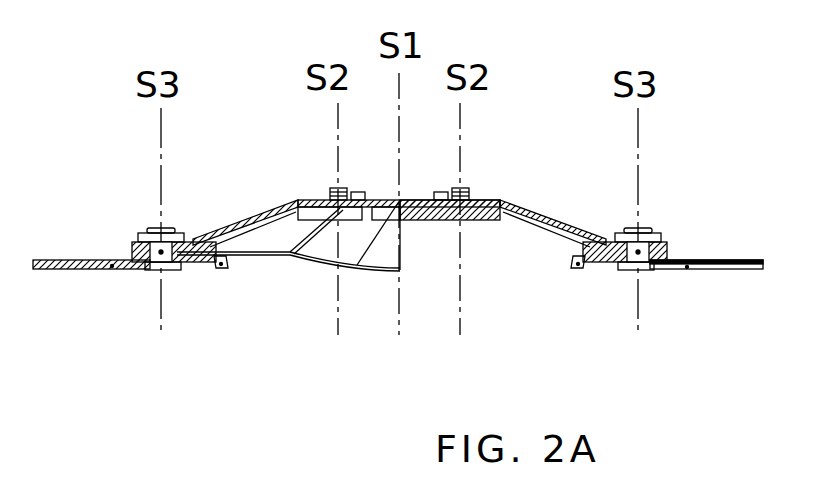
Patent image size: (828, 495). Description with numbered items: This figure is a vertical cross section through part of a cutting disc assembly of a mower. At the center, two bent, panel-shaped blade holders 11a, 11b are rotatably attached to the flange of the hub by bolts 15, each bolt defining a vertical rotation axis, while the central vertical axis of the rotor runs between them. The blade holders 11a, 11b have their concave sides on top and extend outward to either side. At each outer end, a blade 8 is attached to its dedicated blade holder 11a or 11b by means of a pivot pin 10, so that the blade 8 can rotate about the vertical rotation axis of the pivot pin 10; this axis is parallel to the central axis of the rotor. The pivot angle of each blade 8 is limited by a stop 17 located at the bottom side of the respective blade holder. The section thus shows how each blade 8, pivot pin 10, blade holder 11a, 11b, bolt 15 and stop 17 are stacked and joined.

The blade 8 is at (112, 270).
The pivot pin 10 is at (137, 246).
The blade holder 11a is at (273, 213).
The blade holder 11b is at (526, 213).
The bolt 15 is at (332, 190).
The stop 17 is at (222, 270).